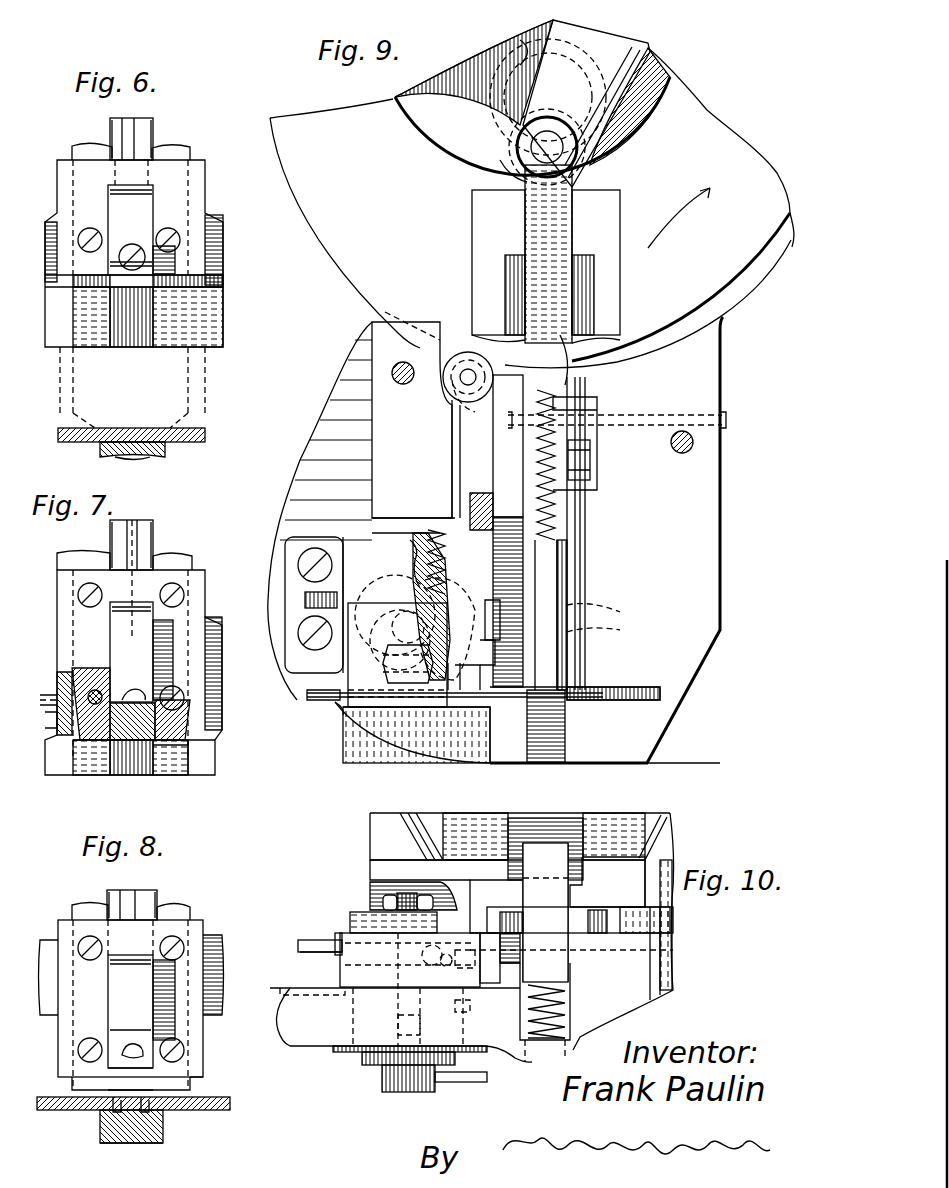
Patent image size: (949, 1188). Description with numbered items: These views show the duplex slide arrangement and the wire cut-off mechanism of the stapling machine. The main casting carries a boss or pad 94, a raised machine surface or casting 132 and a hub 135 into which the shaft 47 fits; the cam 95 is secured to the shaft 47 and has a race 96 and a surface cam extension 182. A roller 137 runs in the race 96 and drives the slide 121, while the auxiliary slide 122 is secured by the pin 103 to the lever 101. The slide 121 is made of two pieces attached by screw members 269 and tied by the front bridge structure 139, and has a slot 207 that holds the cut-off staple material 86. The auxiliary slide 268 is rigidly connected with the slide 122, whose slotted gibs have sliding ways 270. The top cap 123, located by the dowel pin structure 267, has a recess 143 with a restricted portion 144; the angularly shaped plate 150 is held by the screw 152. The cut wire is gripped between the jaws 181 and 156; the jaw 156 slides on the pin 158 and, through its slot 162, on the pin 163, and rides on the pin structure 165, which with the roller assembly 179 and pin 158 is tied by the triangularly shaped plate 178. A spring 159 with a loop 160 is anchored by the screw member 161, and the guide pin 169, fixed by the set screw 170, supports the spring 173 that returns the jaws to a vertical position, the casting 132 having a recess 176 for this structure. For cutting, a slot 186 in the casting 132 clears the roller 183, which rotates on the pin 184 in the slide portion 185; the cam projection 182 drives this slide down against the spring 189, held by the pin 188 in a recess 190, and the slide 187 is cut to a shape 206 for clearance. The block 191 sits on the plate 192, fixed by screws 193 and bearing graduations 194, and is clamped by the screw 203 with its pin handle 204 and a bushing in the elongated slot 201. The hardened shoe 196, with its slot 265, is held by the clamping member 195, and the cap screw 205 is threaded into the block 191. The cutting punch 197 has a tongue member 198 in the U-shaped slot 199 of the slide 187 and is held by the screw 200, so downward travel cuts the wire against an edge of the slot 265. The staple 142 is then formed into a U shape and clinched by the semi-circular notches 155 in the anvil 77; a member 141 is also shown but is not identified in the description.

In FIG. 9, the shaft 47 is at (516, 50).
In FIG. 6, the anvil 77 is at (132, 456).
In FIG. 8, the anvil 77 is at (134, 1145).
In FIG. 9, the staple material 86 is at (314, 700).
In FIG. 10, the staple material 86 is at (302, 938).
In FIG. 9, the boss or pad 94 is at (752, 287).
In FIG. 9, the cam 95 is at (712, 158).
In FIG. 9, the race 96 is at (690, 115).
In FIG. 9, the lever 101 is at (650, 62).
In FIG. 9, the pin 103 is at (563, 150).
In FIG. 7, the slide 121 is at (175, 558).
In FIG. 8, the slide 121 is at (84, 905).
In FIG. 9, the slide 121 is at (478, 240).
In FIG. 6, the auxiliary slide 122 is at (180, 149).
In FIG. 9, the auxiliary slide 122 is at (550, 248).
In FIG. 10, the top cap 123 is at (668, 839).
In FIG. 6, the casting 132 is at (223, 229).
In FIG. 7, the casting 132 is at (215, 688).
In FIG. 8, the casting 132 is at (215, 980).
In FIG. 9, the casting 132 is at (320, 511).
In FIG. 10, the casting 132 is at (655, 985).
In FIG. 9, the hub 135 is at (490, 68).
In FIG. 9, the roller 137 is at (517, 157).
In FIG. 6, the front bridge structure 139 is at (205, 166).
In FIG. 7, the front bridge structure 139 is at (208, 742).
In FIG. 8, the front bridge structure 139 is at (200, 926).
In FIG. 10, the front bridge structure 139 is at (590, 890).
In FIG. 6, the base plate 141 is at (205, 436).
In FIG. 8, the base plate 141 is at (232, 1104).
In FIG. 6, the staple 142 is at (218, 283).
In FIG. 7, the staple 142 is at (205, 750).
In FIG. 8, the staple 142 is at (185, 1091).
In FIG. 10, the recess 143 is at (566, 822).
In FIG. 10, the restricted portion 144 is at (512, 872).
In FIG. 6, the angularly shaped plate 150 is at (125, 211).
In FIG. 7, the angularly shaped plate 150 is at (150, 645).
In FIG. 8, the angularly shaped plate 150 is at (142, 996).
In FIG. 6, the screw 152 is at (140, 248).
In FIG. 7, the screw 152 is at (133, 690).
In FIG. 8, the screw 152 is at (138, 1046).
In FIG. 6, the semi-circular notches 155 is at (166, 450).
In FIG. 8, the semi-circular notches 155 is at (165, 1130).
In FIG. 6, the jaw 156 is at (130, 125).
In FIG. 7, the jaw 156 is at (132, 522).
In FIG. 8, the jaw 156 is at (130, 890).
In FIG. 9, the jaw 156 is at (556, 572).
In FIG. 9, the pin 158 is at (728, 418).
In FIG. 9, the spring 159 is at (556, 510).
In FIG. 9, the loop 160 is at (565, 385).
In FIG. 9, the screw member 161 is at (548, 536).
In FIG. 9, the slot 162 is at (608, 630).
In FIG. 9, the pin 163 is at (605, 610).
In FIG. 9, the pin structure 165 is at (595, 398).
In FIG. 10, the guide pin structure 169 is at (562, 1030).
In FIG. 7, the set screw 170 is at (160, 778).
In FIG. 9, the set screw 170 is at (545, 735).
In FIG. 10, the spring 173 is at (555, 1005).
In FIG. 6, the recess 176 is at (128, 350).
In FIG. 7, the recess 176 is at (130, 765).
In FIG. 10, the recess 176 is at (530, 1048).
In FIG. 9, the triangularly shaped plate 178 is at (583, 405).
In FIG. 9, the roller assembly 179 is at (585, 460).
In FIG. 6, the jaw 181 is at (112, 134).
In FIG. 7, the jaw 181 is at (114, 516).
In FIG. 8, the jaw 181 is at (152, 895).
In FIG. 9, the jaw 181 is at (565, 580).
In FIG. 9, the surface cam extension 182 is at (415, 338).
In FIG. 9, the roller 183 is at (455, 345).
In FIG. 9, the pin 184 is at (470, 373).
In FIG. 9, the slide portion 185 is at (475, 440).
In FIG. 9, the slot 186 is at (452, 454).
In FIG. 9, the slide 187 is at (490, 572).
In FIG. 9, the pin 188 is at (428, 527).
In FIG. 9, the spring 189 is at (448, 578).
In FIG. 10, the spring 189 is at (432, 962).
In FIG. 9, the recess 190 is at (420, 537).
In FIG. 9, the block 191 is at (350, 550).
In FIG. 10, the block 191 is at (352, 962).
In FIG. 9, the plate 192 is at (290, 618).
In FIG. 10, the plate 192 is at (401, 1025).
In FIG. 9, the screws 193 is at (296, 567).
In FIG. 9, the graduations 194 is at (305, 600).
In FIG. 9, the clamping member 195 is at (418, 707).
In FIG. 10, the clamping member 195 is at (357, 915).
In FIG. 7, the hardened shoe 196 is at (45, 692).
In FIG. 9, the hardened shoe 196 is at (336, 708).
In FIG. 10, the hardened shoe 196 is at (335, 952).
In FIG. 9, the cutting punch 197 is at (500, 620).
In FIG. 9, the tongue member 198 is at (492, 648).
In FIG. 9, the U shape slot 199 is at (468, 690).
In FIG. 9, the screw 200 is at (500, 665).
In FIG. 9, the slot 201 is at (390, 590).
In FIG. 10, the slot 201 is at (468, 1012).
In FIG. 9, the screw 203 is at (392, 652).
In FIG. 10, the screw 203 is at (405, 1092).
In FIG. 10, the pin 204 is at (455, 1082).
In FIG. 9, the cap screw 205 is at (398, 702).
In FIG. 10, the cap screw 205 is at (385, 900).
In FIG. 9, the shape 206 is at (406, 690).
In FIG. 6, the slot 207 is at (178, 266).
In FIG. 7, the slot 207 is at (175, 765).
In FIG. 10, the slot 207 is at (673, 918).
In FIG. 7, the slot 265 is at (45, 722).
In FIG. 9, the slot 265 is at (378, 615).
In FIG. 10, the slot 265 is at (368, 1054).
In FIG. 9, the dowel pin structure 267 is at (392, 370).
In FIG. 7, the auxiliary slide 268 is at (110, 550).
In FIG. 8, the auxiliary slide 268 is at (200, 1083).
In FIG. 6, the screw members 269 is at (78, 240).
In FIG. 7, the screw members 269 is at (184, 598).
In FIG. 8, the screw members 269 is at (165, 948).
In FIG. 7, the sliding ways 270 is at (80, 676).
In FIG. 10, the sliding ways 270 is at (572, 933).